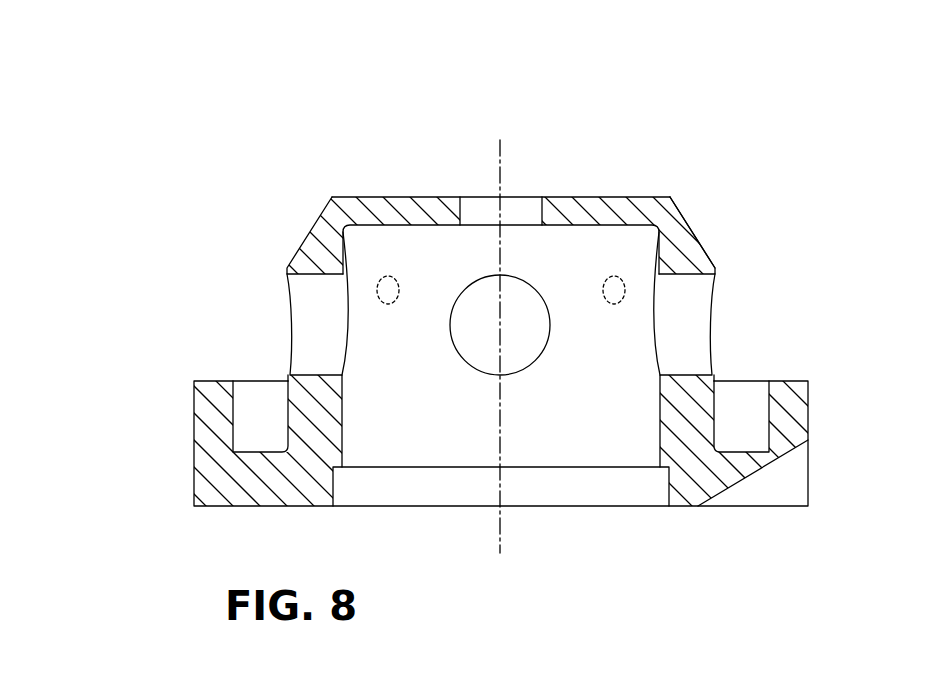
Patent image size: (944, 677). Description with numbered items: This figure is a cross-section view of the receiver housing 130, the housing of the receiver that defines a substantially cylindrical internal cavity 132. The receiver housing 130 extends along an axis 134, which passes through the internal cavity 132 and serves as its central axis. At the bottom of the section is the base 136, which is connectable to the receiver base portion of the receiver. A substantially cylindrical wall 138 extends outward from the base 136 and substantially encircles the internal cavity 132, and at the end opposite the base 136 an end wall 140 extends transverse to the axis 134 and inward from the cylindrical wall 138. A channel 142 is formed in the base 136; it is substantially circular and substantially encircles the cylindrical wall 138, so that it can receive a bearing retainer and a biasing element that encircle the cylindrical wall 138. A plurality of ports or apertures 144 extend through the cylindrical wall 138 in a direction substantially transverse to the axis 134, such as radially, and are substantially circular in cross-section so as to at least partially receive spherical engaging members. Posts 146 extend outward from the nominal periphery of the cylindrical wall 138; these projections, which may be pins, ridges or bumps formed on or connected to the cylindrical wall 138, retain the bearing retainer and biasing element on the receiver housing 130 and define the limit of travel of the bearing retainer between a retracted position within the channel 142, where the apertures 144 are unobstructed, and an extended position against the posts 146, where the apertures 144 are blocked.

The receiver housing 130 is at (262, 218).
The internal cavity 132 is at (594, 486).
The axis 134 is at (500, 160).
The base 136 is at (193, 435).
The cylindrical wall 138 is at (703, 252).
The end wall 140 is at (612, 197).
The channel 142 is at (256, 401).
The apertures 144 is at (313, 299).
The posts 146 is at (386, 305).